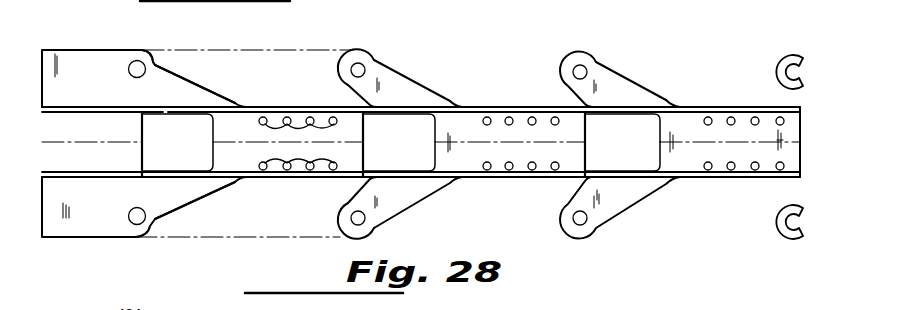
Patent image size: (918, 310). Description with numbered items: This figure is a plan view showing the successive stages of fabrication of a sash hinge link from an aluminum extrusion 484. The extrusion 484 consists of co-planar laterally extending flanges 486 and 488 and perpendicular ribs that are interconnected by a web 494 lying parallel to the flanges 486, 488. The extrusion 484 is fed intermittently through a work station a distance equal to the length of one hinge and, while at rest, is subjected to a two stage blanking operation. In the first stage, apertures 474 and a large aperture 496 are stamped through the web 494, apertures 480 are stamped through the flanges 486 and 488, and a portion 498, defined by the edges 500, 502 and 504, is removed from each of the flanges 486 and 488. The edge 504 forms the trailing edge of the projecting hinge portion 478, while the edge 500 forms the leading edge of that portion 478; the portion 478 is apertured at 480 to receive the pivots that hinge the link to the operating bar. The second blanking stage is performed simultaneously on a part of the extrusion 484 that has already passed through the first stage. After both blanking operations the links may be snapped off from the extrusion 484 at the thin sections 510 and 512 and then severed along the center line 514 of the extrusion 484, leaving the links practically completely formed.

The apertures 474 is at (311, 143).
The projecting portion 478 is at (178, 101).
The apertures 480 is at (130, 74).
The aluminum extrusion 484 is at (70, 56).
The flange 486 is at (116, 52).
The flange 488 is at (118, 237).
The web 494 is at (112, 134).
The large aperture 496 is at (140, 154).
The portion 498 is at (300, 50).
The edge 500 is at (212, 78).
The edge 502 is at (308, 146).
The edge 504 is at (338, 64).
The thin section 510 is at (591, 117).
The thin section 512 is at (595, 170).
The center line 514 is at (710, 145).